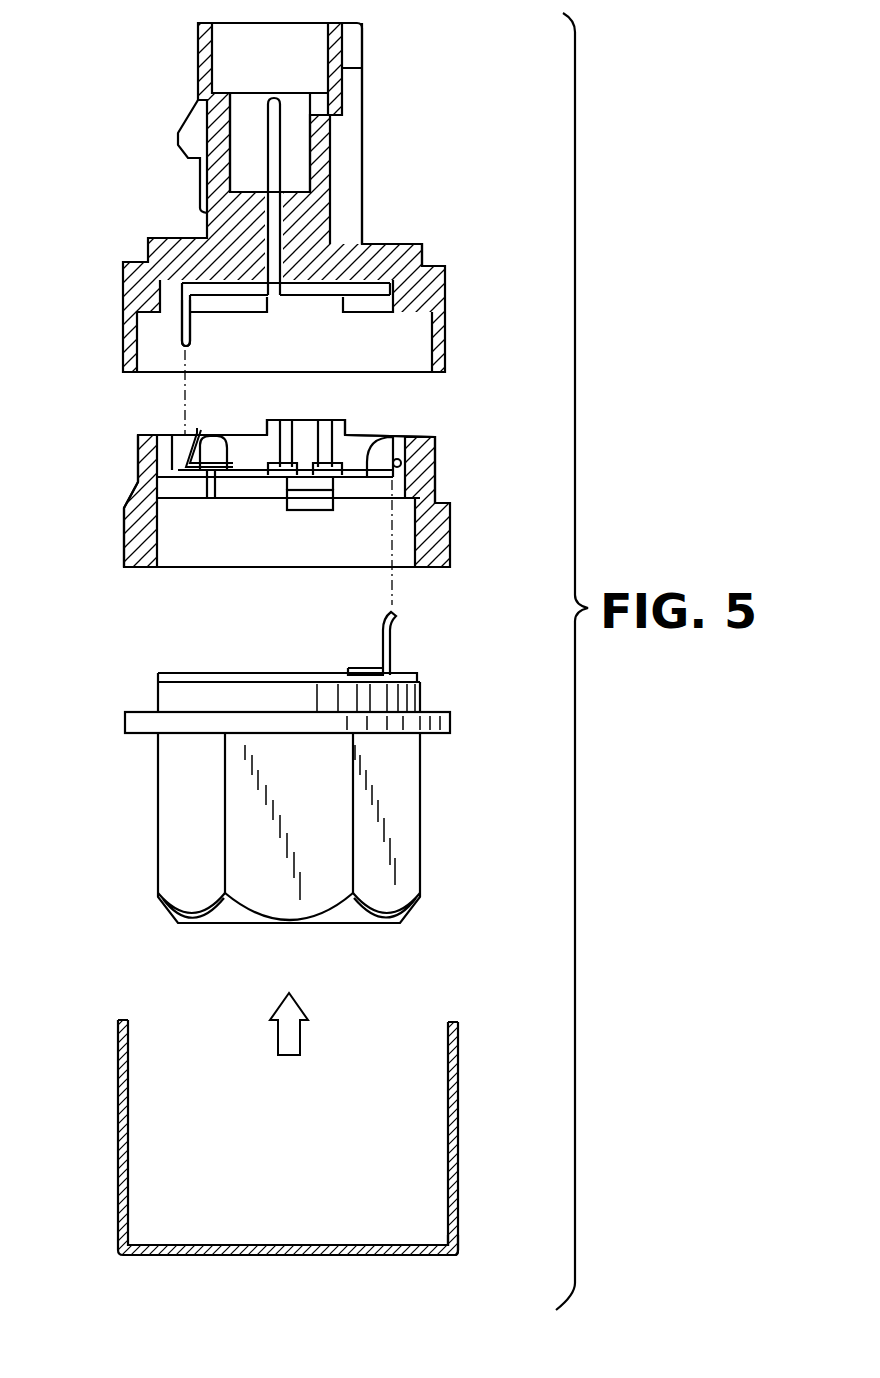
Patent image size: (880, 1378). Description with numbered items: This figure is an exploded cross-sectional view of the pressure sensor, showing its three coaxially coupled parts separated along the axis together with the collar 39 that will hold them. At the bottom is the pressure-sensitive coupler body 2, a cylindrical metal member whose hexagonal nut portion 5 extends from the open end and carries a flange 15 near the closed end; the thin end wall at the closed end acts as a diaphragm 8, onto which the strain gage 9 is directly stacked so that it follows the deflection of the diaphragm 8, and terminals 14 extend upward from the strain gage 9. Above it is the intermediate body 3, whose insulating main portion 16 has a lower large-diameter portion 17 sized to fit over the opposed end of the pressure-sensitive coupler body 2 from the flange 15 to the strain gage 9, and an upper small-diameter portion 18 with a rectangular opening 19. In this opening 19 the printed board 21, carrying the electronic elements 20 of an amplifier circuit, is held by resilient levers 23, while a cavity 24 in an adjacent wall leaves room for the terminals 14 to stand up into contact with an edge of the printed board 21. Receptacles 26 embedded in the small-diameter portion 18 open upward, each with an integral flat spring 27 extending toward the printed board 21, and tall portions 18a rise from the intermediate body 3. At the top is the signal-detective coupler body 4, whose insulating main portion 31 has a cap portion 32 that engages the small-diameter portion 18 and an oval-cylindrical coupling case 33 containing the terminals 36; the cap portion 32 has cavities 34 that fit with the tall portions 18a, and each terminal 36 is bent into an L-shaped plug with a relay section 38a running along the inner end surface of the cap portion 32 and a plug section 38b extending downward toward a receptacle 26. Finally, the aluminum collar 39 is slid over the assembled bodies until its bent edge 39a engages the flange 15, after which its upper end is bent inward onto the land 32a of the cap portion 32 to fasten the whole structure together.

The pressure-sensitive coupler body 2 is at (437, 822).
The intermediate body 3 is at (455, 515).
The signal-detective coupler body 4 is at (383, 155).
The hexagonal nut portion 5 is at (405, 877).
The diaphragm 8 is at (269, 644).
The strain gage 9 is at (180, 672).
The terminals 14 is at (395, 650).
The flange 15 is at (440, 713).
The main portion 16 is at (120, 500).
The large-diameter portion 17 is at (450, 560).
The small-diameter portion 18 is at (440, 473).
The tall portions 18a is at (345, 433).
The rectangular opening 19 is at (240, 440).
The electronic elements 20 is at (305, 505).
The printed board 21 is at (378, 453).
The levers 23 is at (305, 433).
The cavity 24 is at (400, 462).
The receptacles 26 is at (172, 440).
The flat spring 27 is at (208, 500).
The main portion 31 is at (135, 225).
The cap portion 32 is at (447, 290).
The land 32a is at (437, 262).
The coupling case 33 is at (363, 68).
The cavities 34 is at (282, 142).
The terminals 36 is at (300, 173).
The relay section 38a is at (210, 285).
The plug section 38b is at (183, 328).
The collar 39 is at (456, 1133).
The bent edge 39a is at (452, 1257).